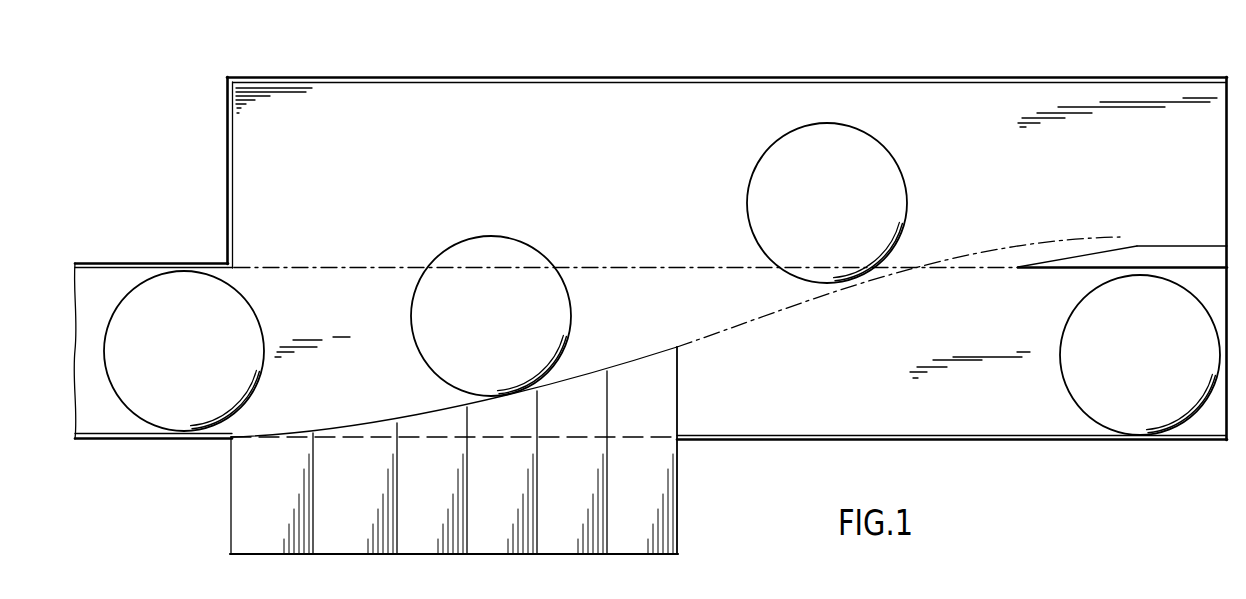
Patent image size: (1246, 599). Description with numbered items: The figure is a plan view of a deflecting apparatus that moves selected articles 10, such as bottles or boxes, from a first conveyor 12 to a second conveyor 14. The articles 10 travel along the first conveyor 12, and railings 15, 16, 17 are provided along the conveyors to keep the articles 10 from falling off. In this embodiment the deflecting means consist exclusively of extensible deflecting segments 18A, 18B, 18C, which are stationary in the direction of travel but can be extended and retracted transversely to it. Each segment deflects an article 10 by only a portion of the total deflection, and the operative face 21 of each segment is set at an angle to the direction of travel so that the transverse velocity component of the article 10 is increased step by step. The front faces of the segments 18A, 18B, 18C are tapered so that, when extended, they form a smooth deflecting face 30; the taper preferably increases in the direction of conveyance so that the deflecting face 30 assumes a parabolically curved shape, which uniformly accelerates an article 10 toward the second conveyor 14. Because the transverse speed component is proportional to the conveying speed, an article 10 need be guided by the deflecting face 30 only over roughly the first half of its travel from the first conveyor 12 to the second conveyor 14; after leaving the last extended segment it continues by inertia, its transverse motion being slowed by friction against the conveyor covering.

The article 10 is at (195, 365).
The first conveyor 12 is at (102, 380).
The second conveyor 14 is at (293, 186).
The railing 15 is at (300, 77).
The railing 16 is at (146, 440).
The railing 17 is at (1147, 248).
The deflecting segment 18A is at (288, 513).
The deflecting segment 18B is at (366, 513).
The deflecting segment 18C is at (441, 513).
The operative face 21 is at (413, 419).
The deflecting face 30 is at (592, 371).